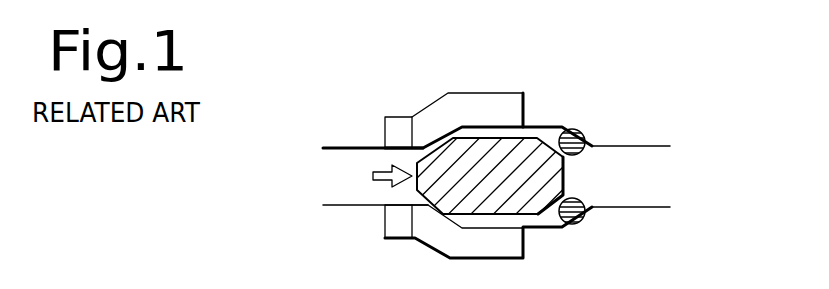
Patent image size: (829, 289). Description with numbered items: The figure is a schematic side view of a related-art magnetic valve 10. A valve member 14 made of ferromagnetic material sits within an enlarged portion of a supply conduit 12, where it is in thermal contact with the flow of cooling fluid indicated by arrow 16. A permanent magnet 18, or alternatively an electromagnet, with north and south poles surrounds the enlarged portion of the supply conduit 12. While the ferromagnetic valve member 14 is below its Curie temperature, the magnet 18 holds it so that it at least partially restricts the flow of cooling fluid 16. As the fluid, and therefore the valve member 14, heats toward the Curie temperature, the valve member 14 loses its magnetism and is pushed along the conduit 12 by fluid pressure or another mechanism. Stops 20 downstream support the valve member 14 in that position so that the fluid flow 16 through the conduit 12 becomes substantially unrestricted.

The magnetic drive assembly (related art) 10 is at (345, 92).
The supply conduit 12 is at (347, 158).
The ferromagnetic material valve member 14 is at (540, 179).
The flow of cooling fluid 16 is at (387, 181).
The permanent magnet 18 is at (458, 103).
The stops 20 is at (572, 137).